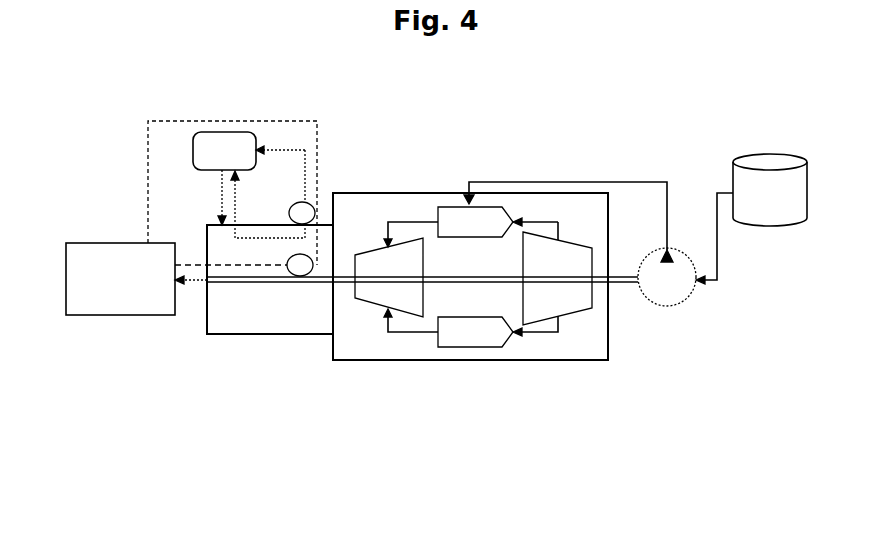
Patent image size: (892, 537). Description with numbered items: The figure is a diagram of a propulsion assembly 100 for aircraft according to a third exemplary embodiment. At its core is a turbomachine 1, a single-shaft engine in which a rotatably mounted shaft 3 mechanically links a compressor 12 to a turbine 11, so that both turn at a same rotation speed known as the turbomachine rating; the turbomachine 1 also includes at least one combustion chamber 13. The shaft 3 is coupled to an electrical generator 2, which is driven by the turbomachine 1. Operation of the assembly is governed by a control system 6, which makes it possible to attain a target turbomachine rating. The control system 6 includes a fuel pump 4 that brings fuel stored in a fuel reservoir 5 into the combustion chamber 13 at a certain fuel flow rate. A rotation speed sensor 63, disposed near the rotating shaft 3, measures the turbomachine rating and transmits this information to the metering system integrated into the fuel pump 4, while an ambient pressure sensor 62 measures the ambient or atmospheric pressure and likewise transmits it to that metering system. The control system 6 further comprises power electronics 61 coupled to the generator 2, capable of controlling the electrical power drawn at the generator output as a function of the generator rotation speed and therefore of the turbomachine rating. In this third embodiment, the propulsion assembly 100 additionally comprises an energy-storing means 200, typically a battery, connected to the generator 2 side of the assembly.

The turbomachine 1 is at (568, 360).
The turbine 11 is at (389, 277).
The compressor 12 is at (557, 278).
The combustion chamber 13 is at (475, 277).
The generator 2 is at (225, 335).
The shaft 3 is at (272, 283).
The fuel pump 4 is at (672, 307).
The fuel reservoir 5 is at (774, 158).
The control system 6 is at (157, 119).
The power electronics 61 is at (224, 151).
The ambient pressure sensor 62 is at (302, 213).
The rotation speed sensor 63 is at (300, 265).
The propulsion assembly 100 is at (527, 427).
The energy-storing means 200 is at (136, 279).